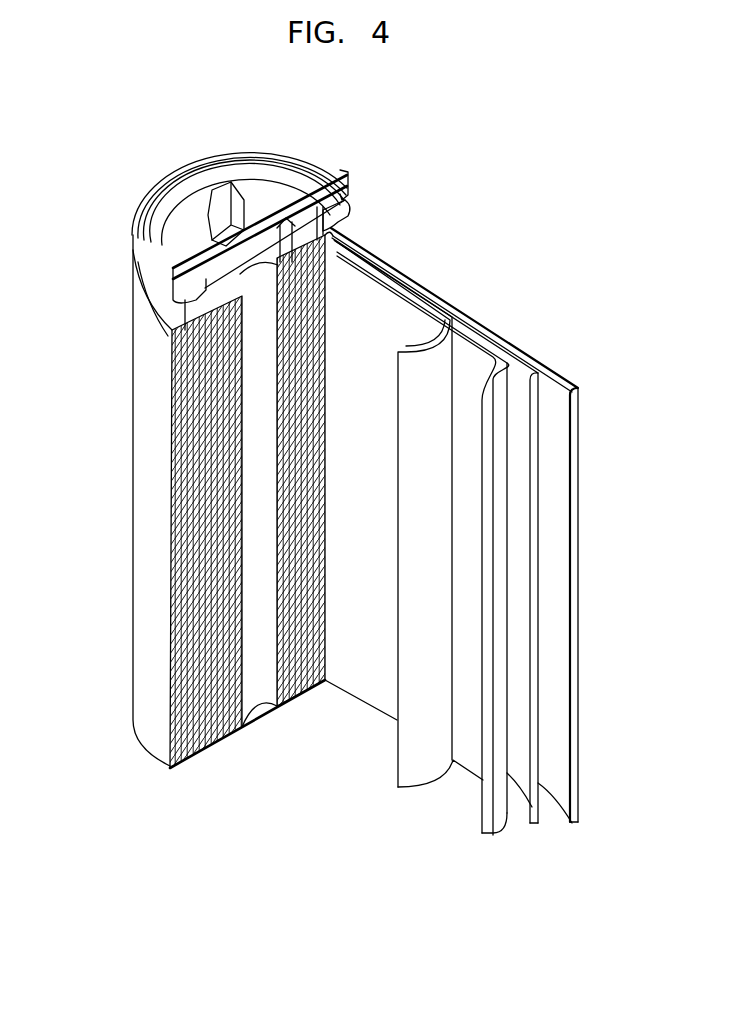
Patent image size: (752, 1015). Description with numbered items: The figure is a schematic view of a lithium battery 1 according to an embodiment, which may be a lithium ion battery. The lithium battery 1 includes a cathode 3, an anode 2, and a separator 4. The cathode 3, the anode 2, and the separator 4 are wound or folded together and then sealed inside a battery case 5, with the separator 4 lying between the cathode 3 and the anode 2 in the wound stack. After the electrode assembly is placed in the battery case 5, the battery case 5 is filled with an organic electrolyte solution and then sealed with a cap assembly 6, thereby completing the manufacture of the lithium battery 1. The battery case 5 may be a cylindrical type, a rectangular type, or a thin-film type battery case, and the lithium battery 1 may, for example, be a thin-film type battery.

The lithium battery 1 is at (517, 183).
The anode 2 is at (571, 370).
The cathode 3 is at (483, 345).
The separator 4 is at (430, 332).
The battery case 5 is at (140, 493).
The cap assembly 6 is at (242, 193).